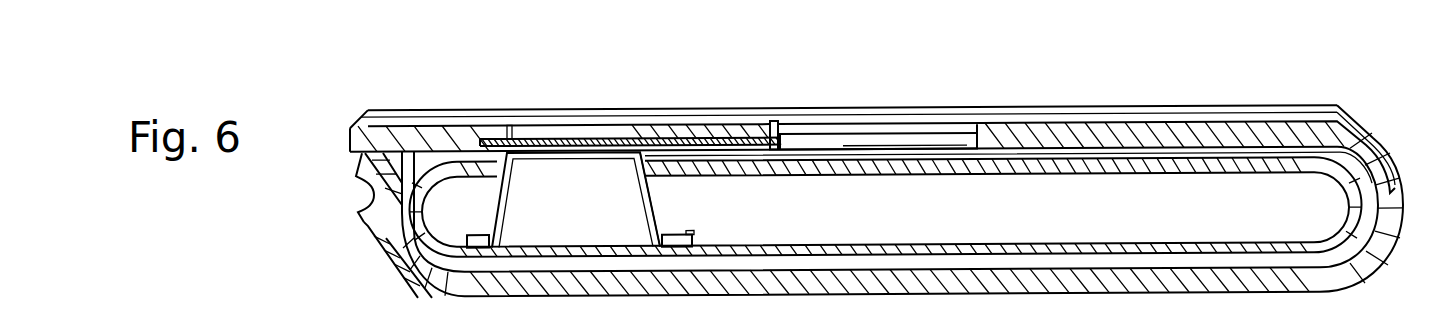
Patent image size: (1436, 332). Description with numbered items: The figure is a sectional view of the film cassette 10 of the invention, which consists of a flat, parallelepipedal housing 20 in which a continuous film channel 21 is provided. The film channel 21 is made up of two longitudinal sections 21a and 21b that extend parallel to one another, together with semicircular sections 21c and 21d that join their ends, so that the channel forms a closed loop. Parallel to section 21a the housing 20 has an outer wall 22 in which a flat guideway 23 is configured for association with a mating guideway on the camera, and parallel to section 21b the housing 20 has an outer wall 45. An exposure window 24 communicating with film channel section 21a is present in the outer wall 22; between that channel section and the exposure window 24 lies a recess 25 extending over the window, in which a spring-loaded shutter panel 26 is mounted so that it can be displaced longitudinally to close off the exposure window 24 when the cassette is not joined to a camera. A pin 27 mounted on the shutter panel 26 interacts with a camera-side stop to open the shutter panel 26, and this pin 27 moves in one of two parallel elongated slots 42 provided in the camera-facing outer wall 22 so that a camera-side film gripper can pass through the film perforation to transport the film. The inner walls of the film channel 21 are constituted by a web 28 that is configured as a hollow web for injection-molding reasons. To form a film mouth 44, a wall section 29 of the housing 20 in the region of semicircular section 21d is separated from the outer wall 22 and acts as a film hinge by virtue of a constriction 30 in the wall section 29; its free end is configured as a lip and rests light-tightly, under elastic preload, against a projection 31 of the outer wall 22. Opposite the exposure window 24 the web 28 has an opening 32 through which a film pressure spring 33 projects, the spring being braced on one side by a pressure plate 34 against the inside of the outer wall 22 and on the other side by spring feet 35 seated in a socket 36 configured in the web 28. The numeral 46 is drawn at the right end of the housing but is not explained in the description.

The film cassette 10 is at (983, 90).
The housing 20 is at (427, 110).
The film channel 21 is at (1283, 160).
The longitudinal section of film channel 21a is at (1057, 153).
The longitudinal section of film channel 21b is at (1067, 273).
The semicircular section of film channel 21c is at (1373, 240).
The semicircular section of film channel 21d is at (415, 232).
The outer wall 22 is at (1134, 138).
The flat guideway 23 is at (1215, 115).
The exposure window 24 is at (556, 133).
The recess 25 is at (840, 146).
The shutter panel 26 is at (667, 127).
The pin 27 is at (775, 120).
The web 28 is at (943, 243).
The wall section 29 is at (383, 243).
The constriction 30 is at (372, 204).
The projection 31 is at (350, 133).
The opening 32 is at (602, 166).
The film pressure spring 33 is at (637, 215).
The pressure plate 34 is at (530, 152).
The spring feet 35 is at (508, 212).
The socket 36 is at (700, 243).
The elongated slots 42 is at (900, 130).
The film mouth 44 is at (352, 163).
The outer wall 45 is at (1238, 278).
The surface layer end 46 is at (1400, 177).